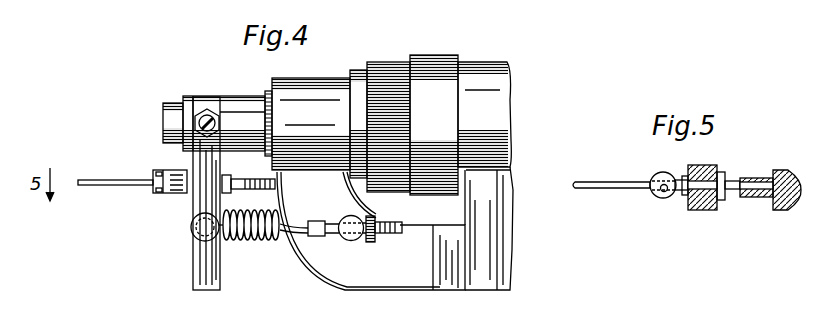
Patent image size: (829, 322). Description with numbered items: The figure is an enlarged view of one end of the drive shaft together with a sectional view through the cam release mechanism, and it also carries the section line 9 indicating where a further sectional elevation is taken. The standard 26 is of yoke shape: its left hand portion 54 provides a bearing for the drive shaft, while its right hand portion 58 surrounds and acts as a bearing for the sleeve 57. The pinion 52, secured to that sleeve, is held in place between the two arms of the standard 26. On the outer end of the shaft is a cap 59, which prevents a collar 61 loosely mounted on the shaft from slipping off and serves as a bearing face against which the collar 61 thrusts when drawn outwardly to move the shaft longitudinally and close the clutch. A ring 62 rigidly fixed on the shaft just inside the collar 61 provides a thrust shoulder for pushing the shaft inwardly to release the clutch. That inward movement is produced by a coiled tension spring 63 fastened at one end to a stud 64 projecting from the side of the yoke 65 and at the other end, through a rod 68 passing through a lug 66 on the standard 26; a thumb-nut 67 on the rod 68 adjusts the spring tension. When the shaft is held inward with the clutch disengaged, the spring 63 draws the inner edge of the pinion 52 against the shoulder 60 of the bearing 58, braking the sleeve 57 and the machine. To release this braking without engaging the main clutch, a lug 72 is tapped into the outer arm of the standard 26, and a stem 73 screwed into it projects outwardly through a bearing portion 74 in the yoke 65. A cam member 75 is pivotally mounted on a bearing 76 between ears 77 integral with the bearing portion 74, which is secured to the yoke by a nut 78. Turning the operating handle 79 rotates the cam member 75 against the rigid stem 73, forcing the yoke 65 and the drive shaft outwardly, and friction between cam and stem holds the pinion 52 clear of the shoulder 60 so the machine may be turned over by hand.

In FIG. 4, the section line 9 is at (207, 97).
In FIG. 4, the standard 26 is at (417, 280).
In FIG. 5, the standard 26 is at (783, 172).
In FIG. 4, the pinion 52 is at (394, 62).
In FIG. 4, the left hand portion 54 is at (328, 78).
In FIG. 4, the sleeve 57 is at (360, 70).
In FIG. 4, the right hand portion 58 is at (490, 63).
In FIG. 4, the cap 59 is at (172, 104).
In FIG. 4, the shoulder 60 is at (434, 55).
In FIG. 4, the collar 61 is at (208, 109).
In FIG. 4, the ring 62 is at (250, 103).
In FIG. 4, the coiled tension spring 63 is at (257, 244).
In FIG. 4, the stud 64 is at (196, 238).
In FIG. 4, the yoke 65 is at (219, 278).
In FIG. 5, the yoke 65 is at (702, 211).
In FIG. 4, the lug 66 is at (350, 241).
In FIG. 4, the thumb-nut 67 is at (373, 216).
In FIG. 4, the rod 68 is at (397, 226).
In FIG. 4, the lug 72 is at (248, 172).
In FIG. 5, the lug 72 is at (760, 178).
In FIG. 5, the stem 73 is at (729, 200).
In FIG. 5, the bearing portion 74 is at (683, 192).
In FIG. 4, the cam member 75 is at (150, 186).
In FIG. 5, the cam member 75 is at (657, 173).
In FIG. 5, the bearing 76 is at (660, 192).
In FIG. 4, the ears 77 is at (158, 172).
In FIG. 5, the ears 77 is at (685, 175).
In FIG. 5, the nut 78 is at (724, 173).
In FIG. 4, the operating handle 79 is at (85, 186).
In FIG. 5, the operating handle 79 is at (590, 190).